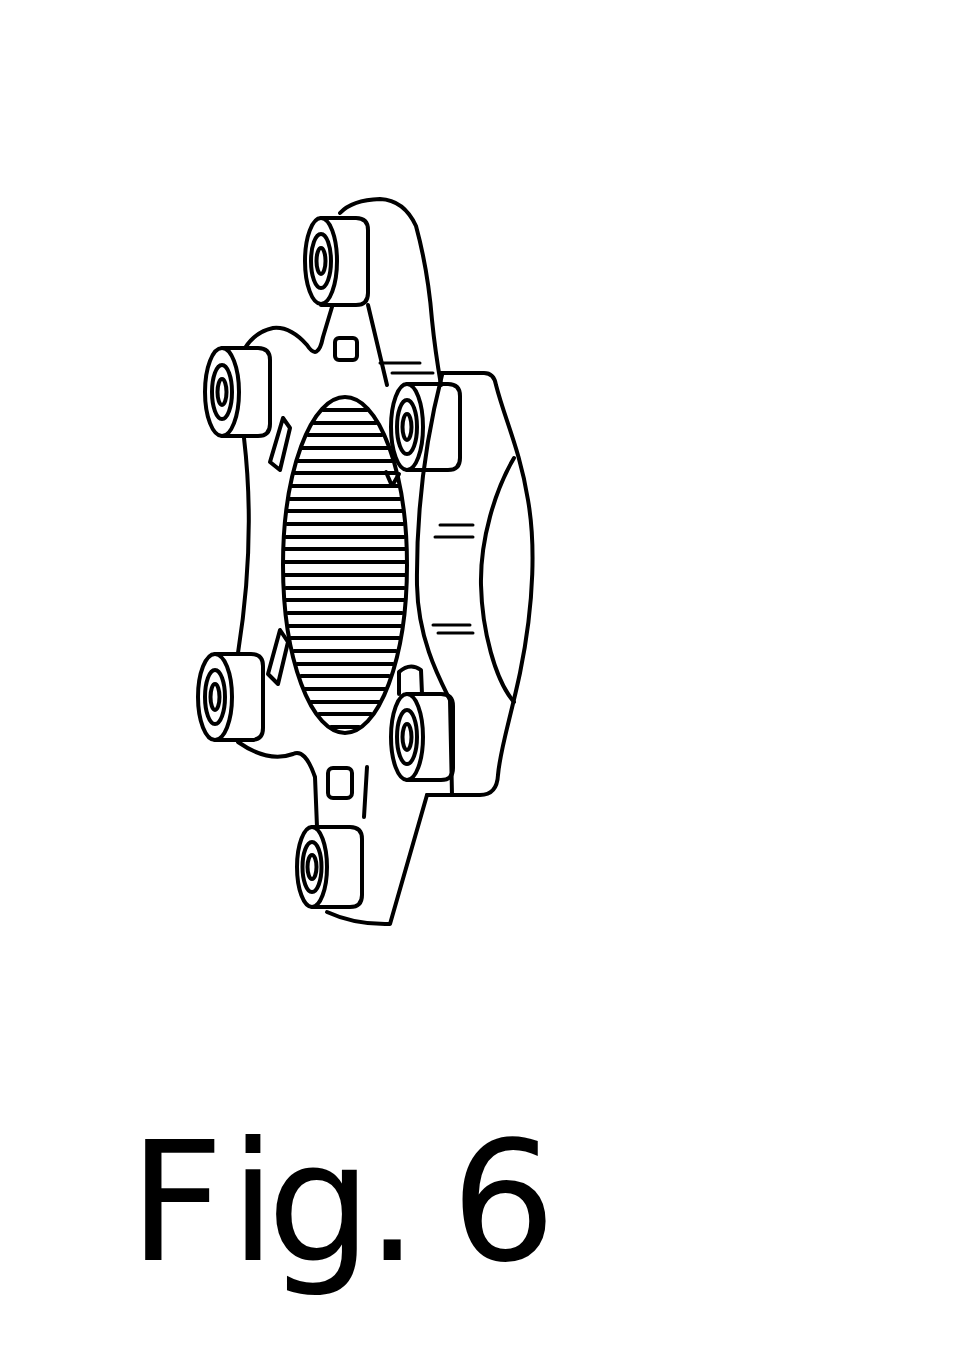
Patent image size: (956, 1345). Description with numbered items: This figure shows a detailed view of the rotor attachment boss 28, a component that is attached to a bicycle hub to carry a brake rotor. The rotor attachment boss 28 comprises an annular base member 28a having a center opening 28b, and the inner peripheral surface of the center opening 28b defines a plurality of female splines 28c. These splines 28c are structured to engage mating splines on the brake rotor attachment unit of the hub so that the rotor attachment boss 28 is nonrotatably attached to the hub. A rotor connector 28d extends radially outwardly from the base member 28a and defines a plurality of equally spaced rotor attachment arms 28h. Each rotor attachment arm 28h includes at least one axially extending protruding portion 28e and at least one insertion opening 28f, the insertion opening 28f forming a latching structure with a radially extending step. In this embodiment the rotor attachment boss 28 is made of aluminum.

The rotor attachment boss 28 is at (489, 143).
The annular base member 28a is at (502, 568).
The center opening 28b is at (302, 566).
The female splines 28c is at (286, 516).
The rotor connector 28d is at (307, 380).
The axially extending protruding portion 28e is at (296, 882).
The insertion opening 28f is at (357, 347).
The rotor attachment arms 28h is at (372, 197).